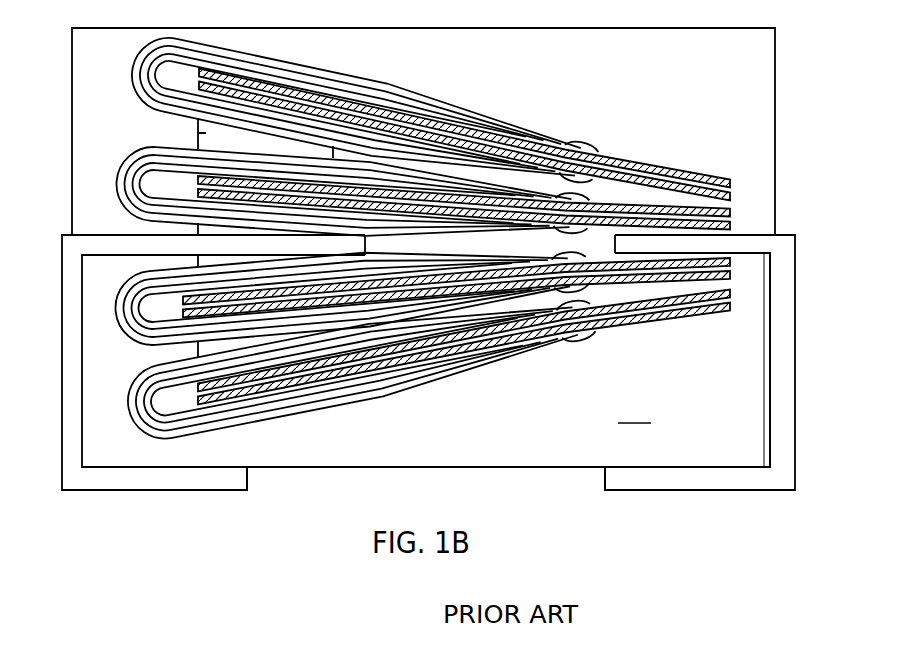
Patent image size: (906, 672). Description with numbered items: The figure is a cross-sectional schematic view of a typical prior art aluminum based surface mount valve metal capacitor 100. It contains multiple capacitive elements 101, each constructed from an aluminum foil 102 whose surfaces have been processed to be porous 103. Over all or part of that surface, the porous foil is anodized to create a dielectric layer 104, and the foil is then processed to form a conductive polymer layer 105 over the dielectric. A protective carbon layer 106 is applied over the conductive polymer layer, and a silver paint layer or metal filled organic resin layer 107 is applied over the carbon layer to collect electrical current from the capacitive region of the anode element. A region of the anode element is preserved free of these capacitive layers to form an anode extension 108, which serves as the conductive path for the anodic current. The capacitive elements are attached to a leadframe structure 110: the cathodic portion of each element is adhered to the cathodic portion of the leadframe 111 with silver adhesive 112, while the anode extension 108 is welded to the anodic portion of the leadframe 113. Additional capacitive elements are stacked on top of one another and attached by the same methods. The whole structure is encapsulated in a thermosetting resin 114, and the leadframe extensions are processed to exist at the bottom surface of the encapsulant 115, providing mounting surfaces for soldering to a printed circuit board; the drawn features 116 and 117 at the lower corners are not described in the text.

The aluminum based surface mount valve metal capacitor 100 is at (628, 29).
The capacitive element 101 is at (431, 101).
The aluminum foil 102 is at (600, 157).
The porous surface 103 is at (647, 165).
The dielectric layer 104 is at (547, 141).
The conductive polymer layer 105 is at (520, 130).
The protective carbon layer 106 is at (483, 117).
The silver paint layer 107 is at (410, 90).
The anode extension 108 is at (468, 135).
The leadframe structure 110 is at (419, 362).
The cathodic portion of the leadframe 111 is at (147, 242).
The silver adhesive 112 is at (198, 133).
The anodic portion of the leadframe 113 is at (750, 240).
The thermosetting resin 114 is at (634, 409).
The bottom surface of the encapsulant 115 is at (355, 470).
The left mounting flange 116 is at (150, 483).
The right mounting flange 117 is at (668, 474).